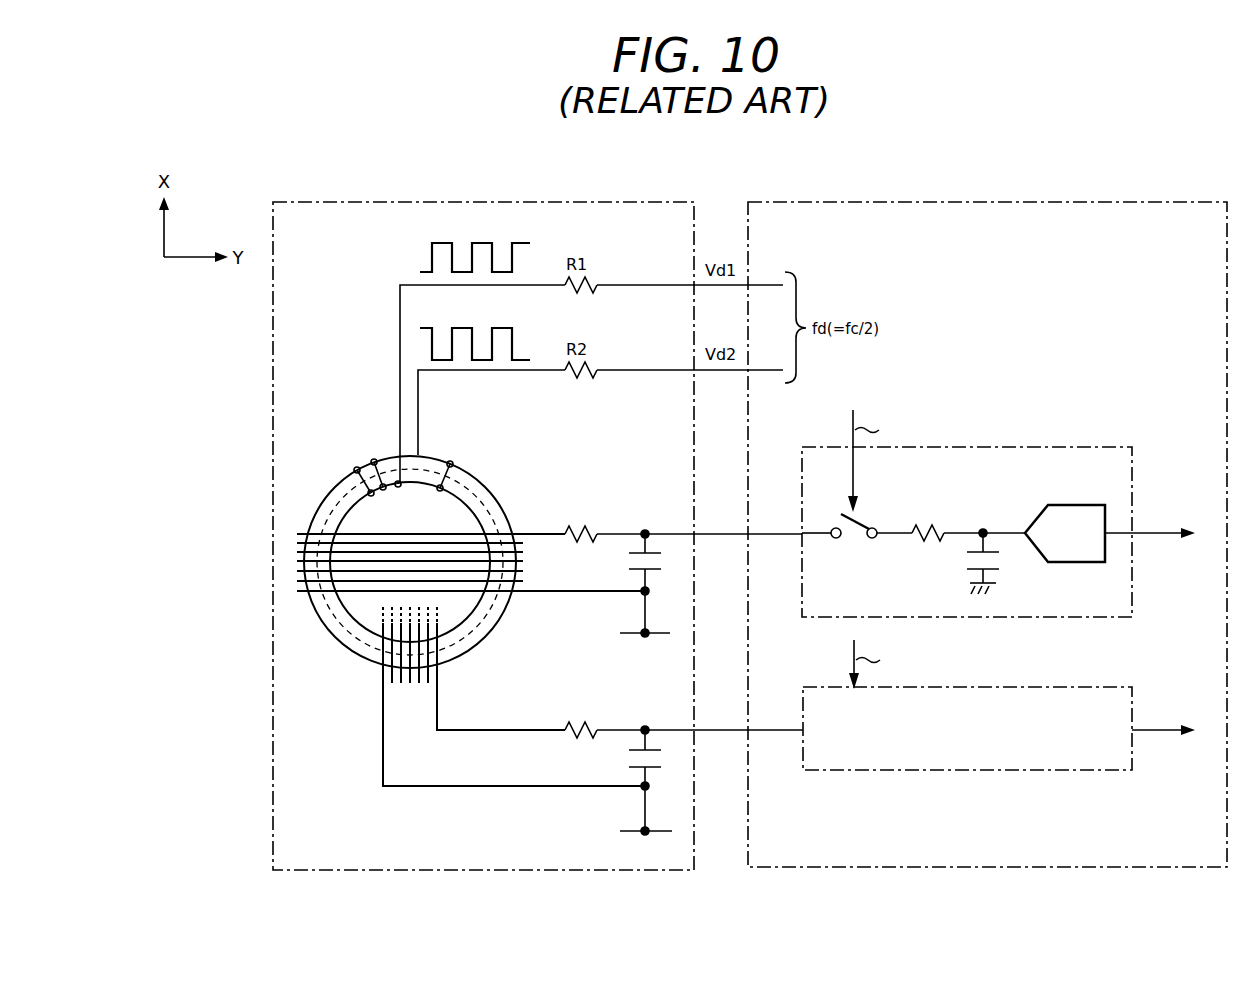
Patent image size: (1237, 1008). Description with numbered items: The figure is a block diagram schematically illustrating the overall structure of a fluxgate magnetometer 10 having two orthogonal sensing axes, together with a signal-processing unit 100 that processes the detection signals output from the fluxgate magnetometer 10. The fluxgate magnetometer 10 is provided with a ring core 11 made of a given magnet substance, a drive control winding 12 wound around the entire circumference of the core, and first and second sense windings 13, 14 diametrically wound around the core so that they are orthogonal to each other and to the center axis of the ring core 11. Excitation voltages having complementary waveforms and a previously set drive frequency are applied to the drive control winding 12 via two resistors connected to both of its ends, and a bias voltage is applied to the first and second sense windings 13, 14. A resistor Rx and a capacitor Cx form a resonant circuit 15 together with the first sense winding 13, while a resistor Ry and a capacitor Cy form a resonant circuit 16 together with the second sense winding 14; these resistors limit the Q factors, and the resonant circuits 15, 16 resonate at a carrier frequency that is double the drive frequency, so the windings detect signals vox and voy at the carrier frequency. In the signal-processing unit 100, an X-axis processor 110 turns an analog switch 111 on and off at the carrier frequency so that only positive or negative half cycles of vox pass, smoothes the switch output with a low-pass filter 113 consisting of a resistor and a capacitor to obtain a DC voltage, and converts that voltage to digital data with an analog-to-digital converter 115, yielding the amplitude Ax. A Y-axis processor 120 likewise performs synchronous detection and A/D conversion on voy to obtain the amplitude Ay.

The fluxgate magnetometer 10 is at (648, 202).
The signal-processing unit 100 is at (803, 202).
The ring core 11 is at (321, 500).
The drive control winding 12 is at (376, 472).
The first sense winding 13 is at (457, 534).
The second sense winding 14 is at (445, 651).
The resonant circuit 15 is at (622, 514).
The resonant circuit 16 is at (622, 714).
The X-axis processor 110 is at (998, 504).
The analog switch 111 is at (876, 512).
The low-pass filter 113 is at (964, 515).
The analog-to-digital converter 115 is at (1073, 505).
The Y-axis processor 120 is at (1090, 687).